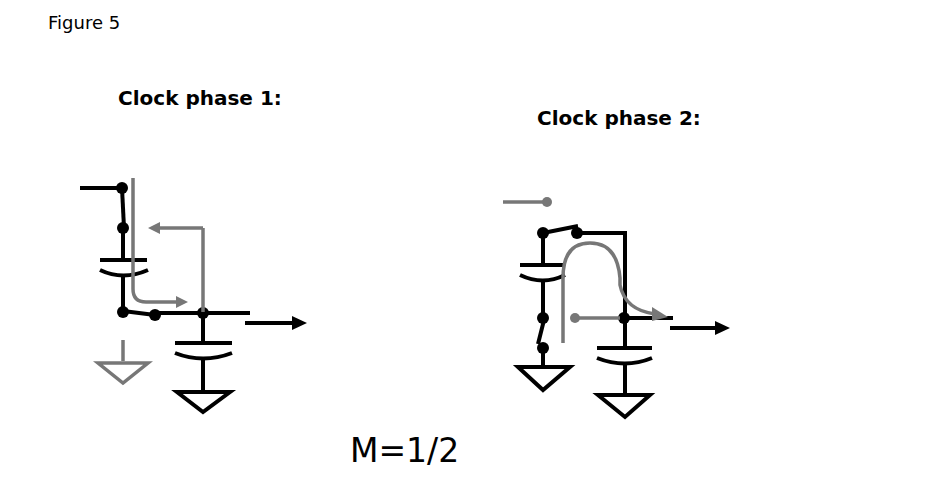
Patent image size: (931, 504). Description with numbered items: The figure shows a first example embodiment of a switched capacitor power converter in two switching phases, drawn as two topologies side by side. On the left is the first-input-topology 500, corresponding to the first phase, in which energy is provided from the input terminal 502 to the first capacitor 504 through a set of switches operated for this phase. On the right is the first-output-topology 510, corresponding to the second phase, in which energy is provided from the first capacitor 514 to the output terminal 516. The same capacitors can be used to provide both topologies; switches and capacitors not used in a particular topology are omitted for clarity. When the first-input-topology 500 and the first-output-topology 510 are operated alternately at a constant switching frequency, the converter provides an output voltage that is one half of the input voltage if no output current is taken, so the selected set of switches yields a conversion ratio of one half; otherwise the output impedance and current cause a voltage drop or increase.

The first-input-topology 500 is at (258, 191).
The input terminal 502 is at (98, 187).
The first capacitor 504 is at (118, 273).
The first-output-topology 510 is at (703, 173).
The first capacitor 514 is at (533, 277).
The output terminal 516 is at (668, 316).